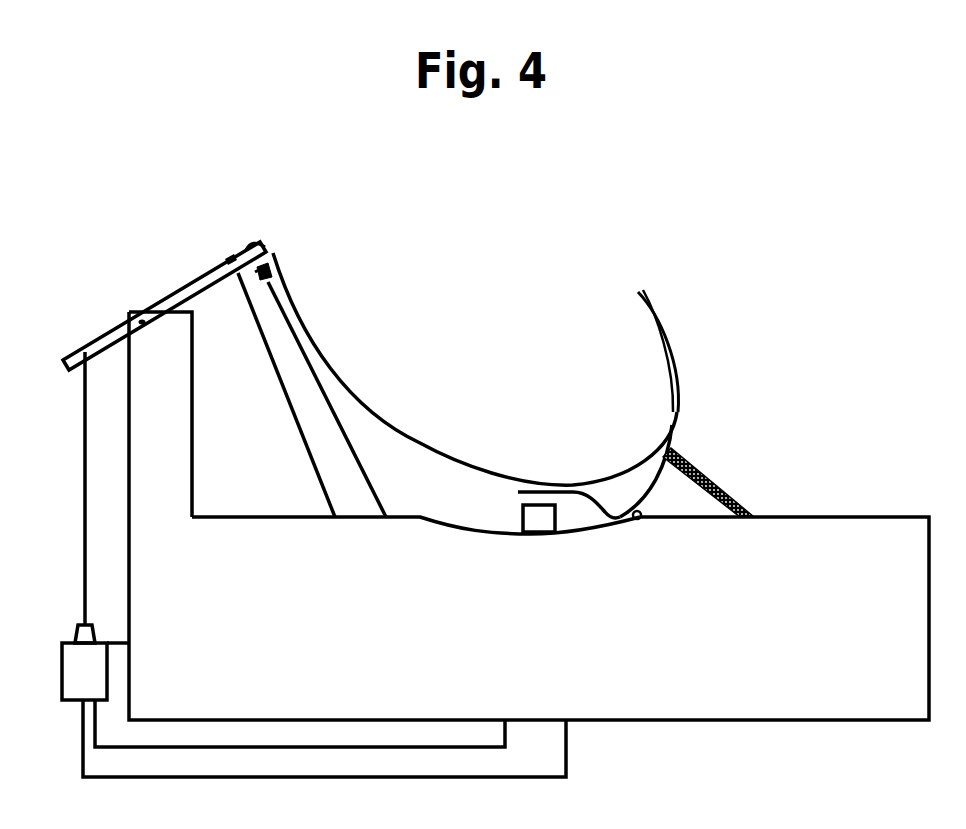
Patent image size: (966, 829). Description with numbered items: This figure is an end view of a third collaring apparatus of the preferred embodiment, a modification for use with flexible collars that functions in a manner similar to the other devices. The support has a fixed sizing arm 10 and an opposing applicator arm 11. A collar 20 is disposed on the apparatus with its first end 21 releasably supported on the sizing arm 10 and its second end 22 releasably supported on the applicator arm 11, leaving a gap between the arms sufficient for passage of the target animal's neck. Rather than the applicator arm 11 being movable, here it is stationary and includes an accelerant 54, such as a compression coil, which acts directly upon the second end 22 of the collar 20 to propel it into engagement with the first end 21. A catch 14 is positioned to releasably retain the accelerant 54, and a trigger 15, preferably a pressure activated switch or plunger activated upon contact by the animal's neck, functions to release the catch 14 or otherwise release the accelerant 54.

The sizing arm 10 is at (658, 328).
The applicator arm 11 is at (307, 412).
The catch 14 is at (202, 283).
The trigger 15 is at (522, 512).
The collar 20 is at (422, 442).
The first end 21 is at (658, 307).
The second end 22 is at (258, 242).
The accelerant 54 is at (258, 280).